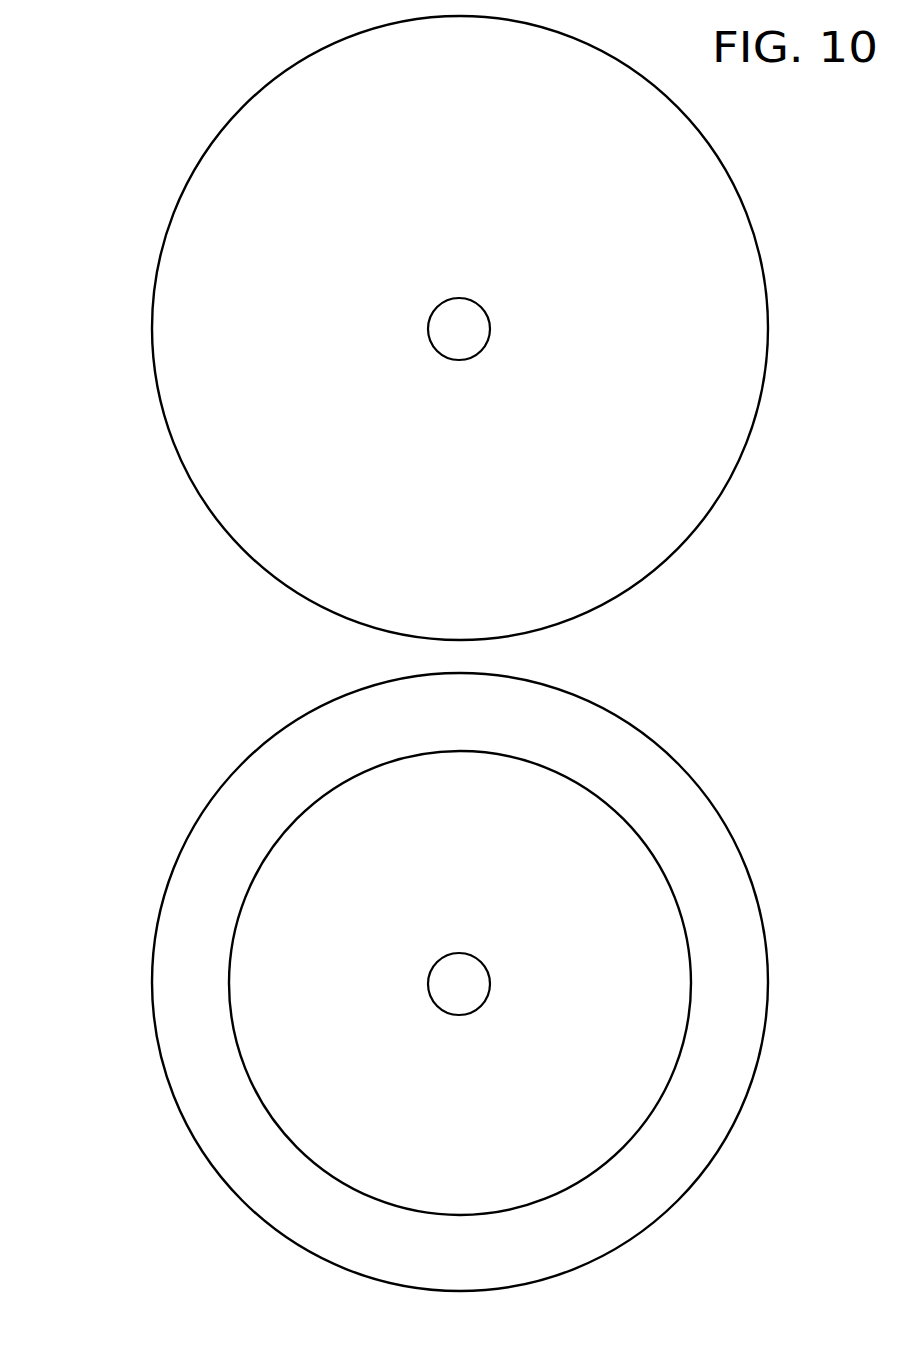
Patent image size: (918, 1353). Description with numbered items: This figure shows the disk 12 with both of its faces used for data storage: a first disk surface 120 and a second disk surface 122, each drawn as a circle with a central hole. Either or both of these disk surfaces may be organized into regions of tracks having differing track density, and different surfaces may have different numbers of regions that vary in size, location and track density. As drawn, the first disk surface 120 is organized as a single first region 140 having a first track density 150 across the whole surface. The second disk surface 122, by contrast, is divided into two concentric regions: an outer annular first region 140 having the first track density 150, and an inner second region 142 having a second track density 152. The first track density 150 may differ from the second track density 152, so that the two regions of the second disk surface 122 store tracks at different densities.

The disk 12 is at (180, 560).
The first disk surface 120 is at (183, 190).
The second disk surface 122 is at (193, 1145).
The first region 140 is at (528, 109).
The second region 142 is at (560, 889).
The first track density 150 is at (556, 139).
The second track density 152 is at (594, 917).